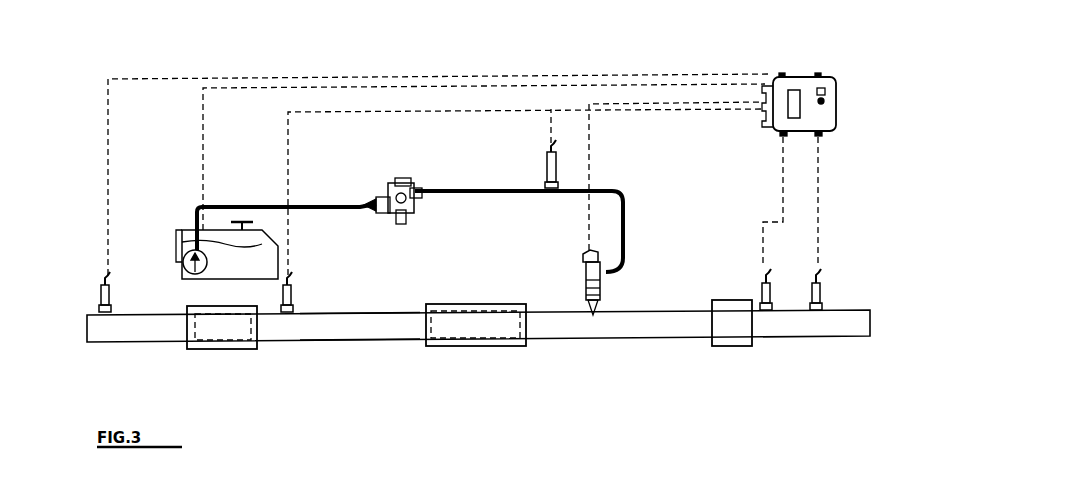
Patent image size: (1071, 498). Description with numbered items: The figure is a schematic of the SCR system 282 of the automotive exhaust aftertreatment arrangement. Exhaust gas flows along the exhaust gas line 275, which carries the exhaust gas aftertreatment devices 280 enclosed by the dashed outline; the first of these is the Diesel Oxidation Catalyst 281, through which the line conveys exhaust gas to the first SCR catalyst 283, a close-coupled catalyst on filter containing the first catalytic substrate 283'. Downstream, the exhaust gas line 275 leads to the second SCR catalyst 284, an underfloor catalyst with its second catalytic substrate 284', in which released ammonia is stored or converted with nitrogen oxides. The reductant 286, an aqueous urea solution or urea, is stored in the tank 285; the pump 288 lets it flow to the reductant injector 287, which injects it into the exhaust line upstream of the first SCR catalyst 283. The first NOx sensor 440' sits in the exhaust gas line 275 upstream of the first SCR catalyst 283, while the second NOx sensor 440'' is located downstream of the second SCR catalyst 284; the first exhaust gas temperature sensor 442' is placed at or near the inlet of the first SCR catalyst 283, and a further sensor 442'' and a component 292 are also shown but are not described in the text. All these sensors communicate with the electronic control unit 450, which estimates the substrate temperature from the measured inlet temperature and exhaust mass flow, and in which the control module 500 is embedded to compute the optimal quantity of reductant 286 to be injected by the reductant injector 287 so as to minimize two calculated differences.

The exhaust gas line 275 is at (380, 330).
The exhaust gas aftertreatment devices 280 is at (228, 168).
The Diesel Oxidation Catalyst 281 is at (730, 345).
The SCR system 282 is at (374, 378).
The first selective catalytic reduction catalyst 283 is at (476, 355).
The first catalytic substrate 283' is at (483, 350).
The second selective catalytic reduction catalyst 284 is at (208, 359).
The second catalytic substrate 284' is at (238, 353).
The tank 285 is at (183, 232).
The reductant 286 is at (250, 252).
The reductant injector 287 is at (603, 275).
The pump 288 is at (187, 263).
The reductant injector 292 is at (587, 265).
The first NOx sensor 440' is at (787, 274).
The second NOx sensor 440'' is at (77, 267).
The first exhaust gas temperature sensor 442' is at (848, 265).
The exhaust sensor 442'' is at (322, 271).
The electronic control unit 450 is at (791, 82).
The control module 500 is at (777, 131).